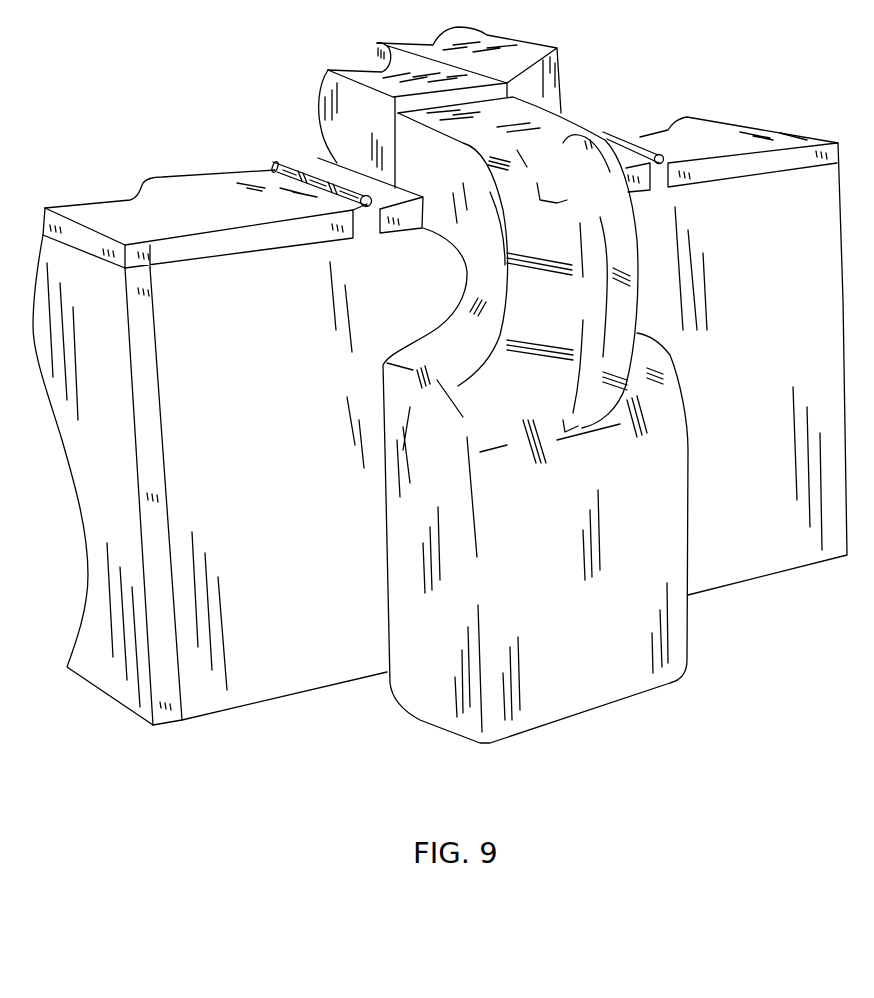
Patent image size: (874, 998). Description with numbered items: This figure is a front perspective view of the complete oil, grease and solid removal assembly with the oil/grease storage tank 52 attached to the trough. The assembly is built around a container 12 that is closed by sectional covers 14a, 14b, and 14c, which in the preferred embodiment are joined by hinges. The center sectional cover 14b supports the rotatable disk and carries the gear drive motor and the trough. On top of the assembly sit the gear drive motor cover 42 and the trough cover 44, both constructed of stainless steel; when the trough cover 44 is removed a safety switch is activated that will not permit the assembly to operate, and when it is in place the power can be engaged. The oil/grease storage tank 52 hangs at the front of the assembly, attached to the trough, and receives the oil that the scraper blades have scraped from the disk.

The container 12 is at (268, 394).
The sectional cover 14a is at (229, 217).
The center sectional cover 14b is at (312, 160).
The sectional cover 14c is at (734, 147).
The gear drive motor cover 42 is at (457, 28).
The trough cover 44 is at (370, 77).
The oil/grease storage tank 52 is at (608, 638).